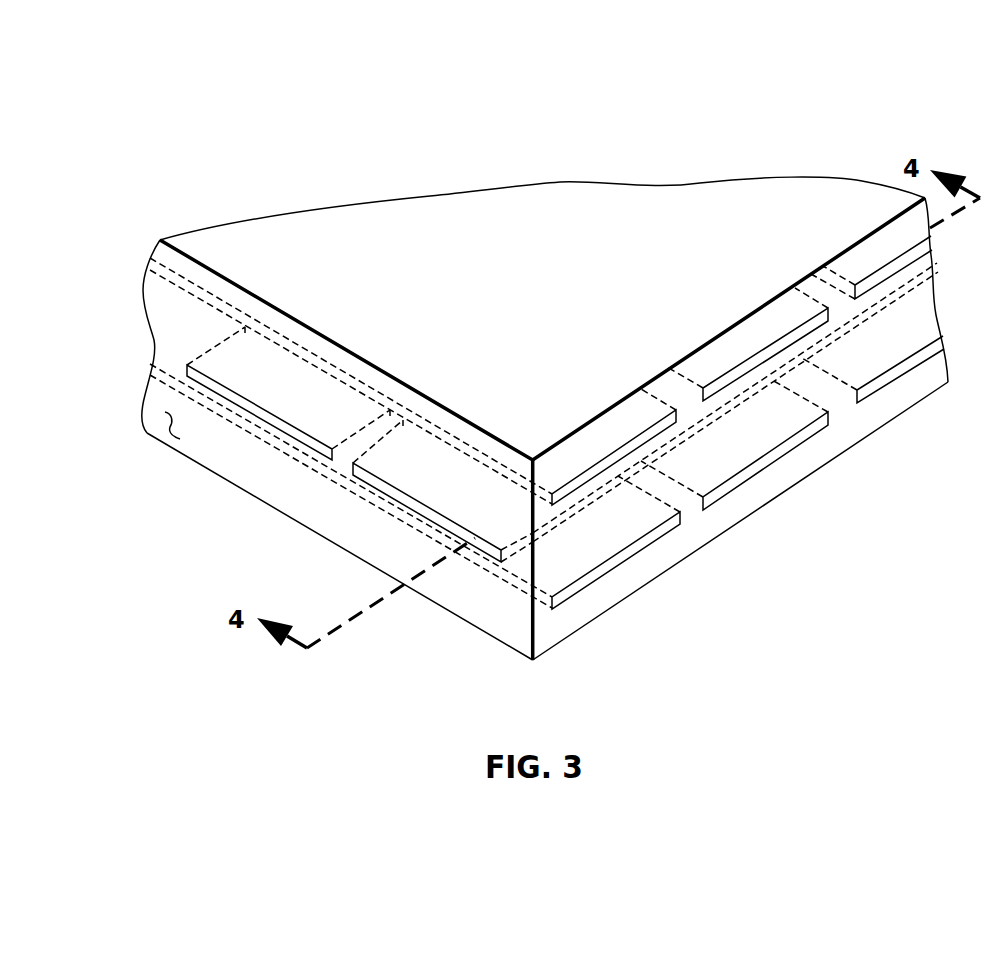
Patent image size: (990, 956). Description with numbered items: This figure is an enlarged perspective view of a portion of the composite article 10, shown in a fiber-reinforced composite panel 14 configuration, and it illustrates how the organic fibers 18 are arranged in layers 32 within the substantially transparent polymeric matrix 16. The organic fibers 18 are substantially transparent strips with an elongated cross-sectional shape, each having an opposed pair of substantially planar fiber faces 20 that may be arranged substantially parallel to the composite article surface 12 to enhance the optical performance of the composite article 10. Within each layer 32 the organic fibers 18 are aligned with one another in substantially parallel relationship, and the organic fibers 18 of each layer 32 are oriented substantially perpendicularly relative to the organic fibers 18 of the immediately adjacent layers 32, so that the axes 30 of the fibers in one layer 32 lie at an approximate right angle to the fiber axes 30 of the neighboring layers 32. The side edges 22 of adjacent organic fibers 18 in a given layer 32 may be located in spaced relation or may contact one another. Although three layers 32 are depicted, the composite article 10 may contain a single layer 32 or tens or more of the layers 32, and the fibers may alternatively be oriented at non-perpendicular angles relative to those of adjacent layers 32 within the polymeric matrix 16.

The composite article 10 is at (533, 195).
The composite article surface 12 is at (700, 203).
The fiber-reinforced composite panel 14 is at (382, 125).
The polymeric matrix 16 is at (150, 435).
The organic fibers 18 is at (255, 408).
The fiber faces 20 is at (902, 248).
The side edges 22 is at (856, 400).
The axes 30 is at (372, 548).
The layers 32 is at (152, 258).